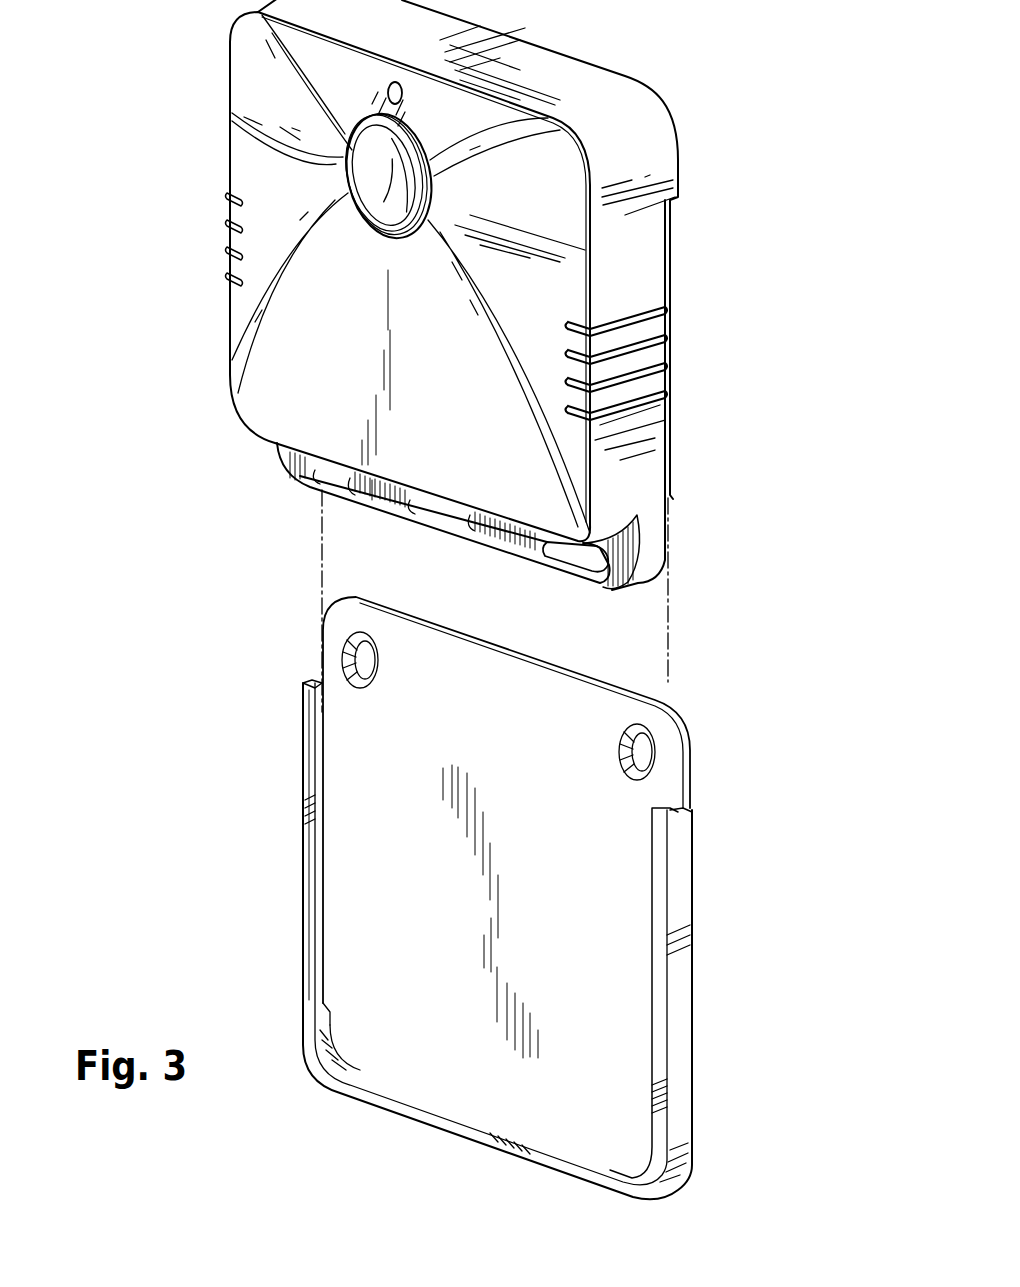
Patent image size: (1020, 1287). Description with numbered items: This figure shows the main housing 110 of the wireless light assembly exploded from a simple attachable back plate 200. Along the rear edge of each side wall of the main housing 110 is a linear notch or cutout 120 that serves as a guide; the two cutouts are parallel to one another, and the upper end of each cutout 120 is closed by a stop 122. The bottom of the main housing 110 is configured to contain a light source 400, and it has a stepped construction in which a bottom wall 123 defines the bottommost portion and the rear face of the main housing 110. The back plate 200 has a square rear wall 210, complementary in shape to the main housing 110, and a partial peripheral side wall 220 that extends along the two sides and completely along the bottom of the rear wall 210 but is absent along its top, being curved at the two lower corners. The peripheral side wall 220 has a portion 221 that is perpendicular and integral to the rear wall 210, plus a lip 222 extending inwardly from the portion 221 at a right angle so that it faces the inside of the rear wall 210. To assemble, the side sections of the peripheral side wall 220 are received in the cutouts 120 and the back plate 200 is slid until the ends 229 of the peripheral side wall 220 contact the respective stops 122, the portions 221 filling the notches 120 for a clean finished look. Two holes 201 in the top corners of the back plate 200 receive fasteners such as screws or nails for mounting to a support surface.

The main housing 110 is at (461, 324).
The notch or cutout 120 is at (660, 450).
The stop 122 is at (677, 197).
The bottom wall 123 is at (627, 587).
The light source 400 is at (323, 472).
The back plate 200 is at (478, 898).
The holes 201 is at (350, 652).
The rear wall 210 is at (582, 950).
The peripheral side wall 220 is at (673, 997).
The portion 221 is at (310, 685).
The lip 222 is at (657, 822).
The ends 229 is at (678, 803).